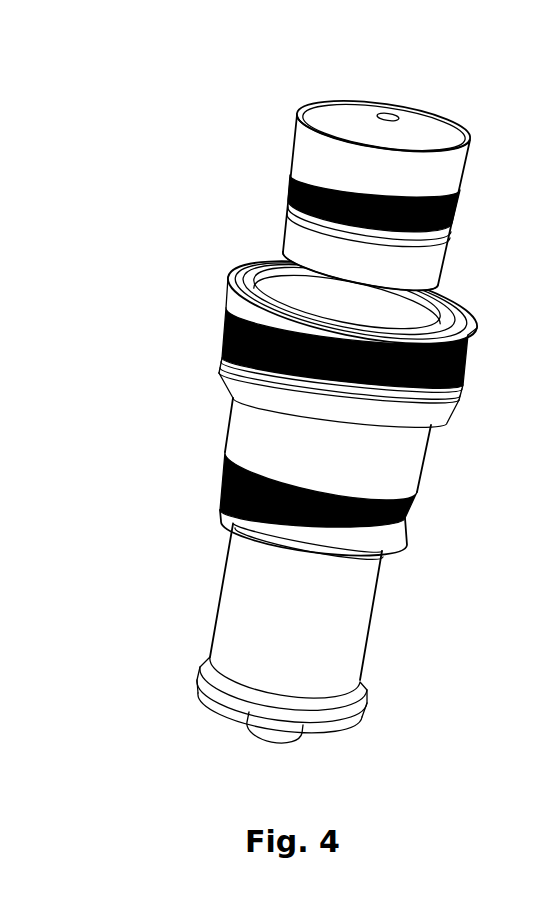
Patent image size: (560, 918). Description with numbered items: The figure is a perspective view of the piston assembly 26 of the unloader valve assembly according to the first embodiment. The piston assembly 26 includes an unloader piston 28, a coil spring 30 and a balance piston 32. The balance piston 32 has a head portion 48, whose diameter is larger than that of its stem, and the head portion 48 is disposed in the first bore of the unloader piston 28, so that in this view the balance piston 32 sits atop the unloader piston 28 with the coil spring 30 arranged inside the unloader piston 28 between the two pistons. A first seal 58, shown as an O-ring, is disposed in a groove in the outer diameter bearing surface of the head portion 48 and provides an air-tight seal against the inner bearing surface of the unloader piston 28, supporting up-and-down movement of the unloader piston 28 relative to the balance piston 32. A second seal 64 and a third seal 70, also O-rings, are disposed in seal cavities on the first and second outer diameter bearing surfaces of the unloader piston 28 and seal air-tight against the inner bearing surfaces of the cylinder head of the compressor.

The piston assembly 26 is at (344, 385).
The unloader piston 28 is at (235, 610).
The coil spring 30 is at (279, 270).
The balance piston 32 is at (454, 271).
The head portion 48 is at (364, 191).
The first seal 58 is at (290, 182).
The second seal 64 is at (222, 318).
The third seal 70 is at (224, 462).